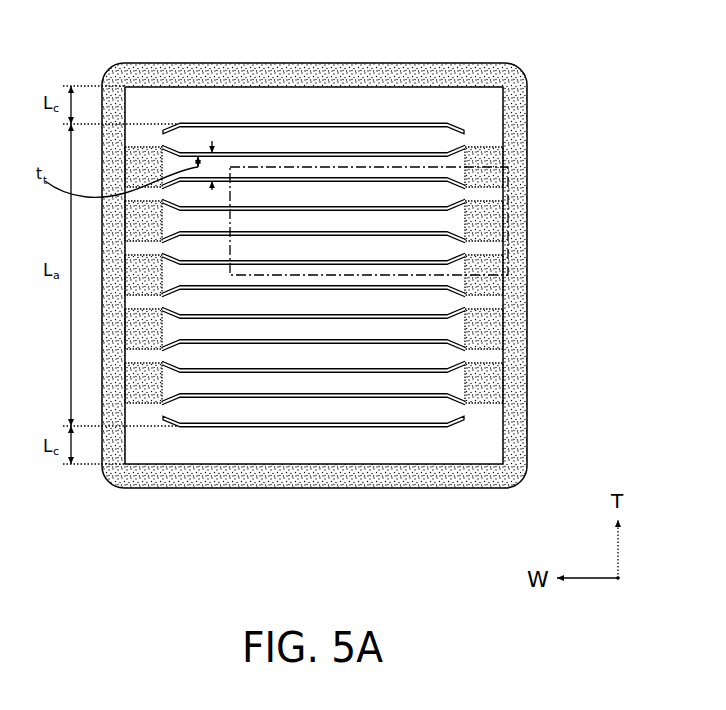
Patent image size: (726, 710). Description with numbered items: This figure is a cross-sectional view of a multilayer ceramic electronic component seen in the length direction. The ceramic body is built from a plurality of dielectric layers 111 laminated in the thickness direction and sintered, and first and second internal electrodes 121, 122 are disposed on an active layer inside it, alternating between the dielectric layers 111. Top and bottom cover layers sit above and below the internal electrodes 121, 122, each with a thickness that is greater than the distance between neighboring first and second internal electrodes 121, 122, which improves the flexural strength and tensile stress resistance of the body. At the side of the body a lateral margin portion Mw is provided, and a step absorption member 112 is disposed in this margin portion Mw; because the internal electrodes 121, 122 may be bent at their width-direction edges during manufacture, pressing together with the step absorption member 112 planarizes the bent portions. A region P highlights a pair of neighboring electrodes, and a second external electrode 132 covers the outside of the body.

The dielectric layer 111 is at (390, 106).
The step absorption member 112 is at (508, 225).
The first internal electrode 121 is at (292, 398).
The second internal electrode 122 is at (330, 427).
The second external electrode 132 is at (449, 66).
The electrode pair region P is at (289, 158).
The lateral margin portion Mw is at (487, 413).